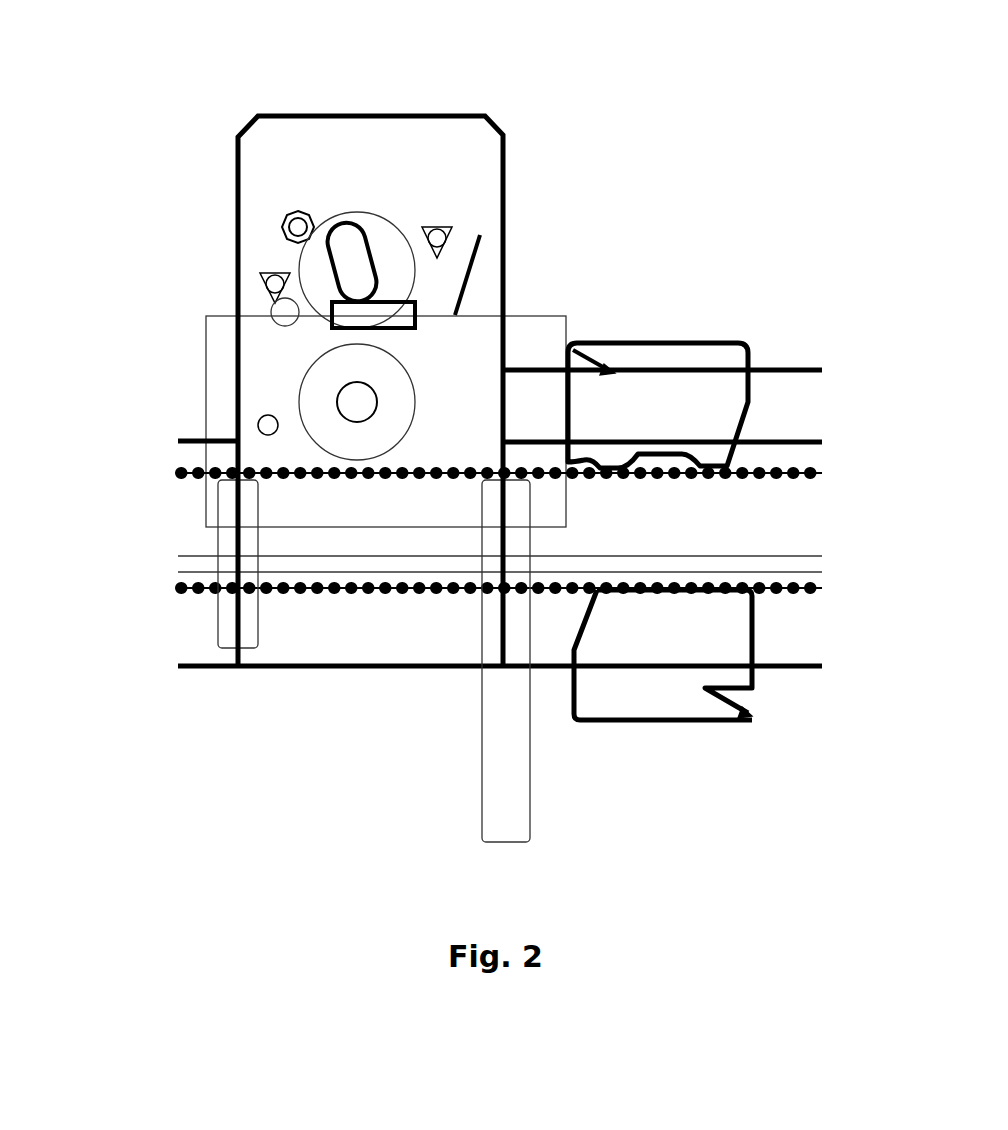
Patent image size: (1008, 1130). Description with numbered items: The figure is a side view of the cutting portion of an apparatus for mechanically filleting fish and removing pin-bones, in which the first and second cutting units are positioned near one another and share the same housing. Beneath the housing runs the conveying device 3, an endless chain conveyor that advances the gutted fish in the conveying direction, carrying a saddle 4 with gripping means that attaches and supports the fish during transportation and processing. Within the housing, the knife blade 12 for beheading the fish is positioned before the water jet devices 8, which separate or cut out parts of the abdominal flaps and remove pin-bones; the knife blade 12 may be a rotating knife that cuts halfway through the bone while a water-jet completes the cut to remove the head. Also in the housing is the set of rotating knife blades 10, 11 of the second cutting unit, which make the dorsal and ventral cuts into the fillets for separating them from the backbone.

The conveying device 3 is at (181, 468).
The saddle 4 is at (735, 336).
The water jet device 8 is at (417, 325).
The rotating knife blade 10 is at (348, 220).
The rotating knife blade 11 is at (317, 362).
The knife blade 12 is at (483, 247).